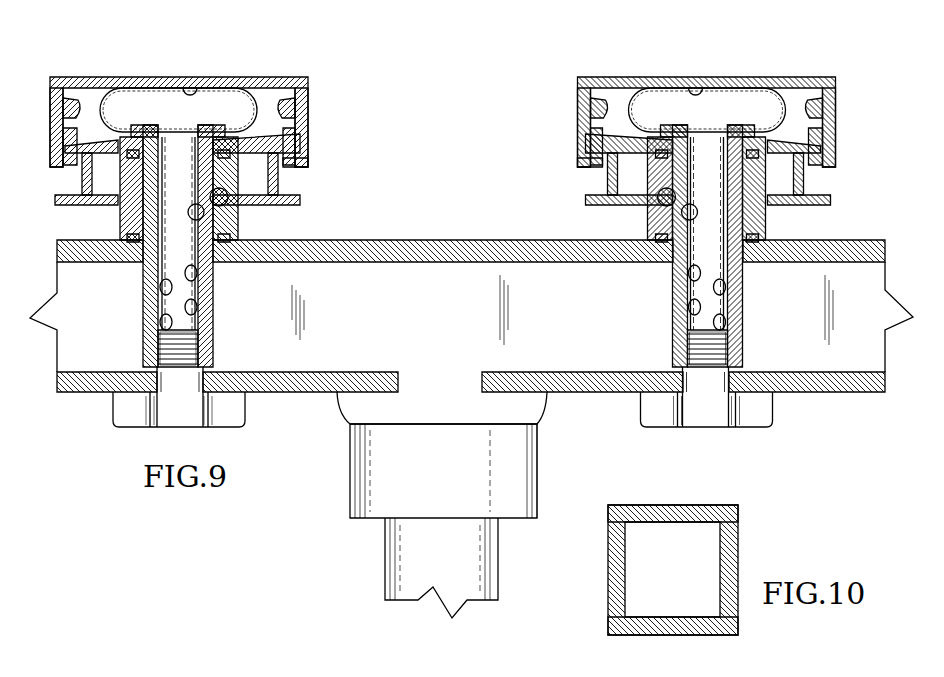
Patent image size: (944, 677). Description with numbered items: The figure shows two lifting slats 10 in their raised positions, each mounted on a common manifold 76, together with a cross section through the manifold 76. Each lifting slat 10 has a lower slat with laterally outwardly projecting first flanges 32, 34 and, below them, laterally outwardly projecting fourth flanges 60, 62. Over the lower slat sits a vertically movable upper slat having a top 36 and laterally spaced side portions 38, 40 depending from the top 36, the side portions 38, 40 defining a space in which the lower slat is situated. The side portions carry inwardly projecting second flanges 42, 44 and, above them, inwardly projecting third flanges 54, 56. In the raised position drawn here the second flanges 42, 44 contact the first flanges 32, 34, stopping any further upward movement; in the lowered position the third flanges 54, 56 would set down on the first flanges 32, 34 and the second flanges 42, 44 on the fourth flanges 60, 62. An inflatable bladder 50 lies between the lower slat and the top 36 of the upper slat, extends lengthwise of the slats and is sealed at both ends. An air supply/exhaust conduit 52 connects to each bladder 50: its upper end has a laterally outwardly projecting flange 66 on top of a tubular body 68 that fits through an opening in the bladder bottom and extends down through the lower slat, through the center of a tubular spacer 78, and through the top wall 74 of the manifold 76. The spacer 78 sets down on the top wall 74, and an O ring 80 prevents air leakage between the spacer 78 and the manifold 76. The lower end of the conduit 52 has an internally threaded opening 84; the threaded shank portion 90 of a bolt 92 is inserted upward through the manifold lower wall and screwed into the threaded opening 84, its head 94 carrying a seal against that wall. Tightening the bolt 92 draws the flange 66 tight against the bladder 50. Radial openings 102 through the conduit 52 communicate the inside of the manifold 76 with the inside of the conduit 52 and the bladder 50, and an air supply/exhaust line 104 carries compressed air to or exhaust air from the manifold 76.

In FIG. 9, the lifting slat 10 is at (278, 60).
In FIG. 9, the first flange 32 is at (67, 133).
In FIG. 9, the first flange 34 is at (300, 150).
In FIG. 9, the top 36 is at (110, 78).
In FIG. 9, the side portion 38 is at (50, 105).
In FIG. 9, the side portion 40 is at (308, 126).
In FIG. 9, the second flange 42 is at (70, 165).
In FIG. 9, the second flange 44 is at (300, 172).
In FIG. 9, the inflatable bladder 50 is at (197, 92).
In FIG. 9, the air supply/exhaust conduit 52 is at (135, 301).
In FIG. 9, the third flange 54 is at (72, 99).
In FIG. 9, the third flange 56 is at (292, 103).
In FIG. 9, the fourth flange 60 is at (72, 205).
In FIG. 9, the fourth flange 62 is at (300, 195).
In FIG. 9, the flange 66 is at (150, 125).
In FIG. 9, the tubular body 68 is at (203, 220).
In FIG. 9, the top wall 74 is at (423, 240).
In FIG. 10, the top wall 74 is at (625, 505).
In FIG. 9, the manifold 76 is at (93, 397).
In FIG. 10, the manifold 76 is at (602, 549).
In FIG. 9, the tubular spacer 78 is at (120, 212).
In FIG. 9, the O ring 80 is at (595, 393).
In FIG. 10, the O ring 80 is at (625, 627).
In FIG. 9, the threaded opening 84 is at (192, 337).
In FIG. 9, the threaded shank portion 90 is at (202, 352).
In FIG. 9, the bolt 92 is at (164, 410).
In FIG. 9, the head 94 is at (225, 420).
In FIG. 9, the radial openings 102 is at (162, 286).
In FIG. 9, the air supply/exhaust line 104 is at (357, 472).